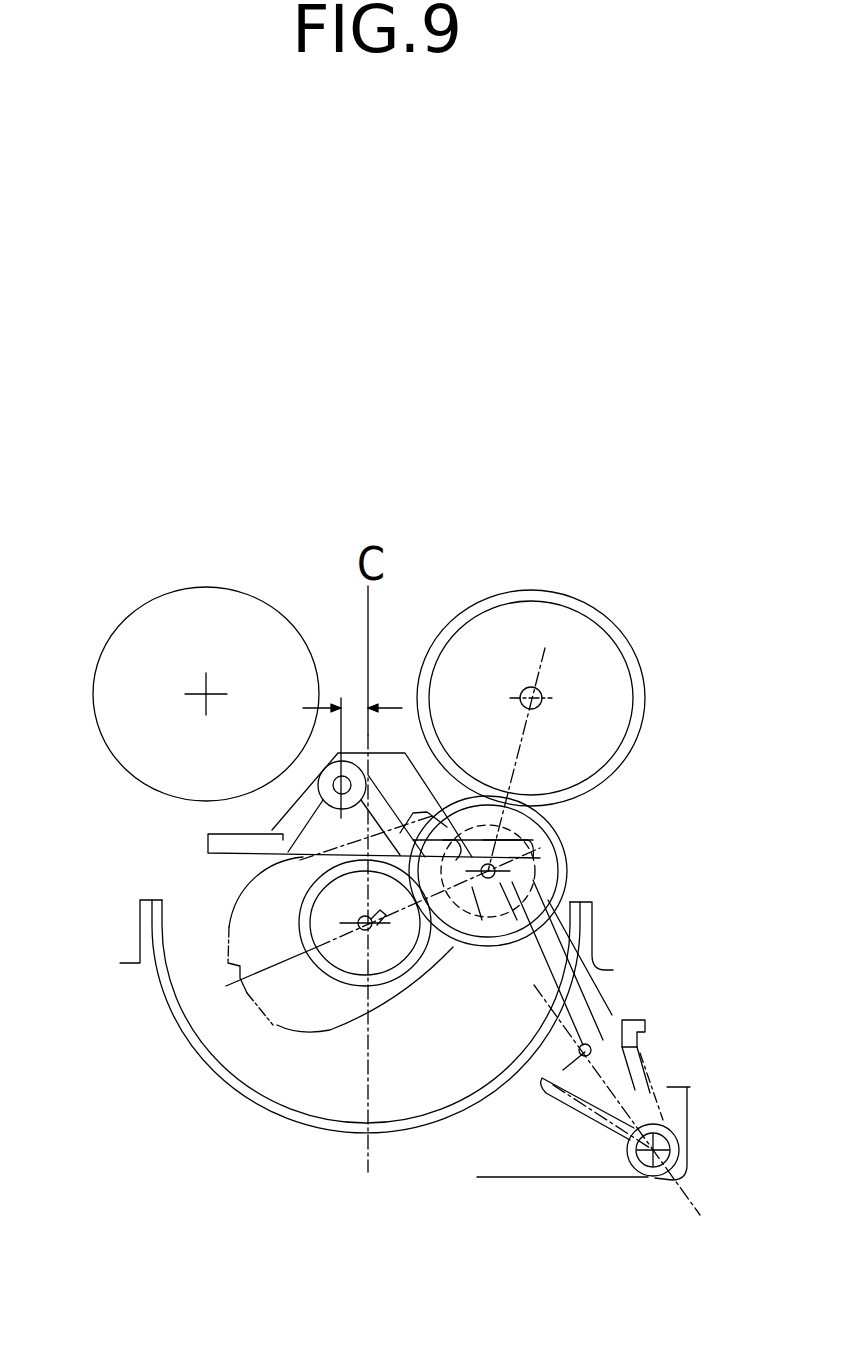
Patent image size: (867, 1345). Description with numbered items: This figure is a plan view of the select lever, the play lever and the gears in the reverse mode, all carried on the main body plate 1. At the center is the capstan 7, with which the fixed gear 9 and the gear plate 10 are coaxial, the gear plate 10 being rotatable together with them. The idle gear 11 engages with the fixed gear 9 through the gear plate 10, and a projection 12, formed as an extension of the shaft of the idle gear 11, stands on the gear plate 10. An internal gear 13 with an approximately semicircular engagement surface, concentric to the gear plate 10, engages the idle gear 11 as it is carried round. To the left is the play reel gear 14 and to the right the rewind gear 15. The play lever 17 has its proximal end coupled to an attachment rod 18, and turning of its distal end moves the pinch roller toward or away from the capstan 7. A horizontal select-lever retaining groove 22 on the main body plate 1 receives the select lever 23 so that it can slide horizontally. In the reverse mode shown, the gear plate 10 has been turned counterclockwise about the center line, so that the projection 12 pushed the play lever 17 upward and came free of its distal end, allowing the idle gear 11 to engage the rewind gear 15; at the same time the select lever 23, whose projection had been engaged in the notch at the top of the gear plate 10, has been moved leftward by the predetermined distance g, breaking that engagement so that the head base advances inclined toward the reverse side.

The main body plate 1 is at (585, 1167).
The capstan 7 is at (372, 920).
The fixed gear 9 is at (315, 963).
The gear plate 10 is at (387, 998).
The idle gear 11 is at (575, 887).
The projection 12 is at (567, 885).
The internal gear 13 is at (175, 1000).
The play reel gear 14 is at (150, 607).
The rewind gear 15 is at (608, 625).
The play lever 17 is at (540, 1005).
The attachment rod 18 is at (646, 1172).
The select-lever retaining groove 22 is at (280, 838).
The select lever 23 is at (505, 832).
The predetermined distance g is at (356, 702).